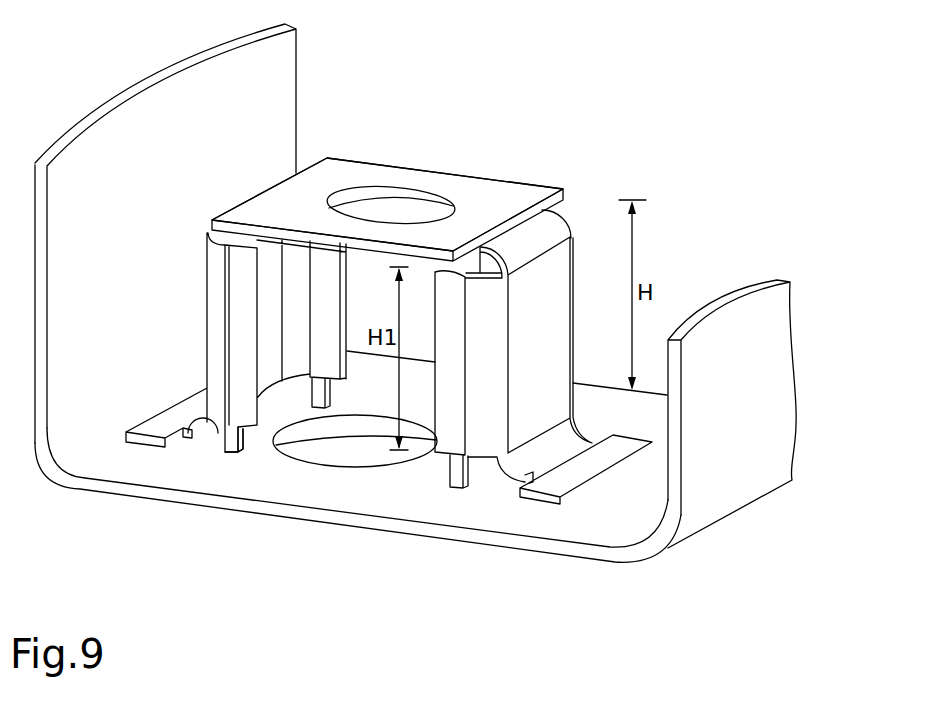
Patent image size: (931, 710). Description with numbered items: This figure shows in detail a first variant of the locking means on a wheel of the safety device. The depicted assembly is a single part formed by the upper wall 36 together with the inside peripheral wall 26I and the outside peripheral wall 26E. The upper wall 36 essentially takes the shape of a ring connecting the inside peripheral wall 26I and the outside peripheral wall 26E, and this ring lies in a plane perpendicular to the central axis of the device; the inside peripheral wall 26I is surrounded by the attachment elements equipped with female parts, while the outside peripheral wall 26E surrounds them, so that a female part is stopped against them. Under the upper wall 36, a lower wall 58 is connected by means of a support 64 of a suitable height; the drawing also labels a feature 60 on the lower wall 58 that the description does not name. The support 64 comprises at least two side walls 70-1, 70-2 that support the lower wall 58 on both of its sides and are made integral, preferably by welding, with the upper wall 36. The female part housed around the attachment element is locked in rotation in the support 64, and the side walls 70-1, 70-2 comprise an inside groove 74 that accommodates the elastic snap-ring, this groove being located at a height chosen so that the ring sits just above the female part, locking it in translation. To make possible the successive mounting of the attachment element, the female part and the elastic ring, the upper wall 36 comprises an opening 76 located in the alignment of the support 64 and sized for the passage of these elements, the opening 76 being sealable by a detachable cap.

The outside peripheral wall 26E is at (103, 202).
The inside peripheral wall 26I is at (740, 333).
The upper wall 36 is at (125, 494).
The lower wall 58 is at (481, 198).
The opening 60 is at (400, 193).
The support 64 is at (344, 170).
The side wall 70-1 is at (550, 273).
The side wall 70-2 is at (217, 302).
The inside groove 74 is at (242, 458).
The opening 76 is at (353, 447).